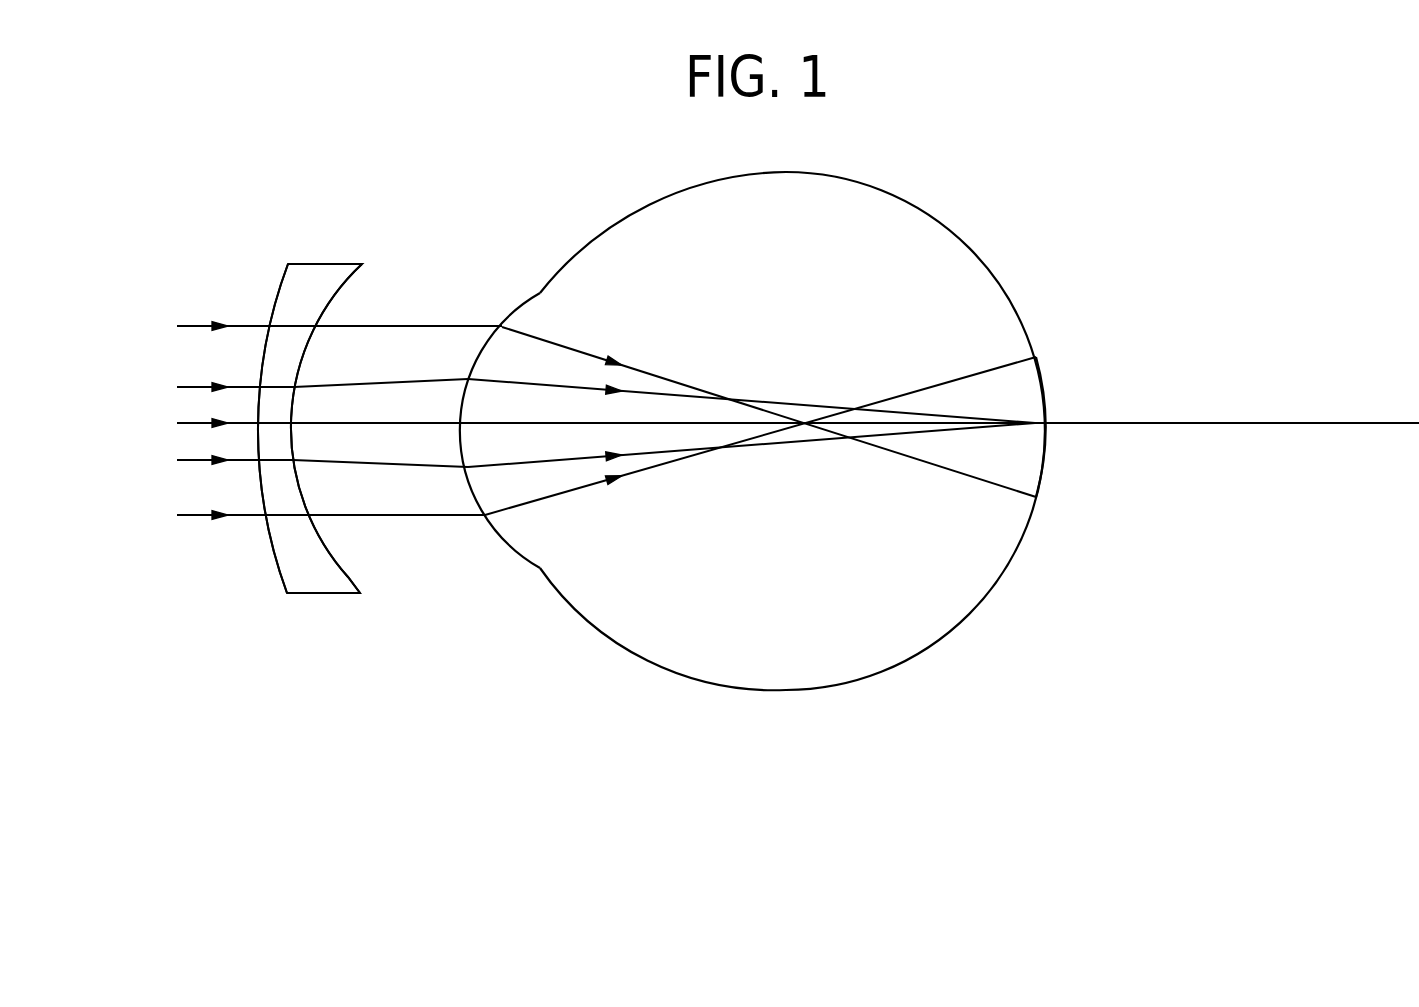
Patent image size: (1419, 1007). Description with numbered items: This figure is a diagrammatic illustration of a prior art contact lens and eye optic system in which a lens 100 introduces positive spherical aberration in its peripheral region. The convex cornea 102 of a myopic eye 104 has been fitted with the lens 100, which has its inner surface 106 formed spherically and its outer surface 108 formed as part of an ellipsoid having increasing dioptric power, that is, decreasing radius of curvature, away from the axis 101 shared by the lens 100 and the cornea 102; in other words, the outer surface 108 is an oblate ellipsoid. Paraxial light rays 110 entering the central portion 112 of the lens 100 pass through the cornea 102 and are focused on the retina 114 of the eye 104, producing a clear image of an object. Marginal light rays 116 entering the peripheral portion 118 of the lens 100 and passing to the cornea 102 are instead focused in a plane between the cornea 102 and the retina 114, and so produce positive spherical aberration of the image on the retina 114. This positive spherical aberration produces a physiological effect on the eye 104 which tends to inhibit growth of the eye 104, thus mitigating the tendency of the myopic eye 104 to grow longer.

The lens 100 is at (325, 595).
The axis 101 is at (1283, 422).
The cornea 102 is at (512, 315).
The eye 104 is at (810, 738).
The inner surface 106 is at (348, 577).
The outer surface 108 is at (283, 582).
The paraxial light rays 110 is at (190, 462).
The central portion 112 is at (257, 443).
The retina 114 is at (1045, 457).
The marginal light rays 116 is at (192, 325).
The peripheral portion 118 is at (280, 287).